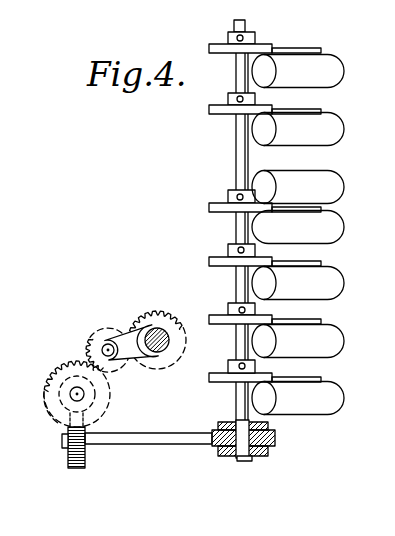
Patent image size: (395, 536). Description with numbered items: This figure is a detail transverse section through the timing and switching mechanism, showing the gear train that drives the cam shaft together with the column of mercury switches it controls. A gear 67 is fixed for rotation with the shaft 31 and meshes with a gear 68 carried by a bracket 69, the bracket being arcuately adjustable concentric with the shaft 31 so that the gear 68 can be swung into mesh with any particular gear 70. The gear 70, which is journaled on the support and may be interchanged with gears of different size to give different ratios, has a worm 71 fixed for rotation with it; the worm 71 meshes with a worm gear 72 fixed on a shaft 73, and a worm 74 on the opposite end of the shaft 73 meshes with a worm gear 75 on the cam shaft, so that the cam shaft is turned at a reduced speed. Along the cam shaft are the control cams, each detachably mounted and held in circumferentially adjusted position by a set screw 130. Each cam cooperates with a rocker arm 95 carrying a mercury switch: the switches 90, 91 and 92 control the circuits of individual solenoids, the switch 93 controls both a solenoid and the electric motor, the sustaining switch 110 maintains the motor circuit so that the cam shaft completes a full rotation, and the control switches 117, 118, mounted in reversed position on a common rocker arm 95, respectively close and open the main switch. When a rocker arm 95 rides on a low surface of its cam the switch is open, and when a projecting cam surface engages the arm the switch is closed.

The shaft 31 is at (164, 351).
The gear 67 is at (165, 317).
The gear 68 is at (110, 331).
The bracket 69 is at (135, 338).
The gear 70 is at (57, 373).
The worm 71 is at (51, 413).
The worm gear 72 is at (85, 466).
The shaft 73 is at (155, 445).
The worm 74 is at (230, 455).
The worm gear 75 is at (262, 457).
The switch 90 is at (335, 128).
The switch 91 is at (338, 72).
The switch 92 is at (345, 341).
The switch 93 is at (341, 400).
The rocker arm 95 is at (297, 114).
The sustaining switch 110 is at (343, 287).
The control switch 117 is at (338, 191).
The control switch 118 is at (330, 233).
The set screw 130 is at (242, 363).